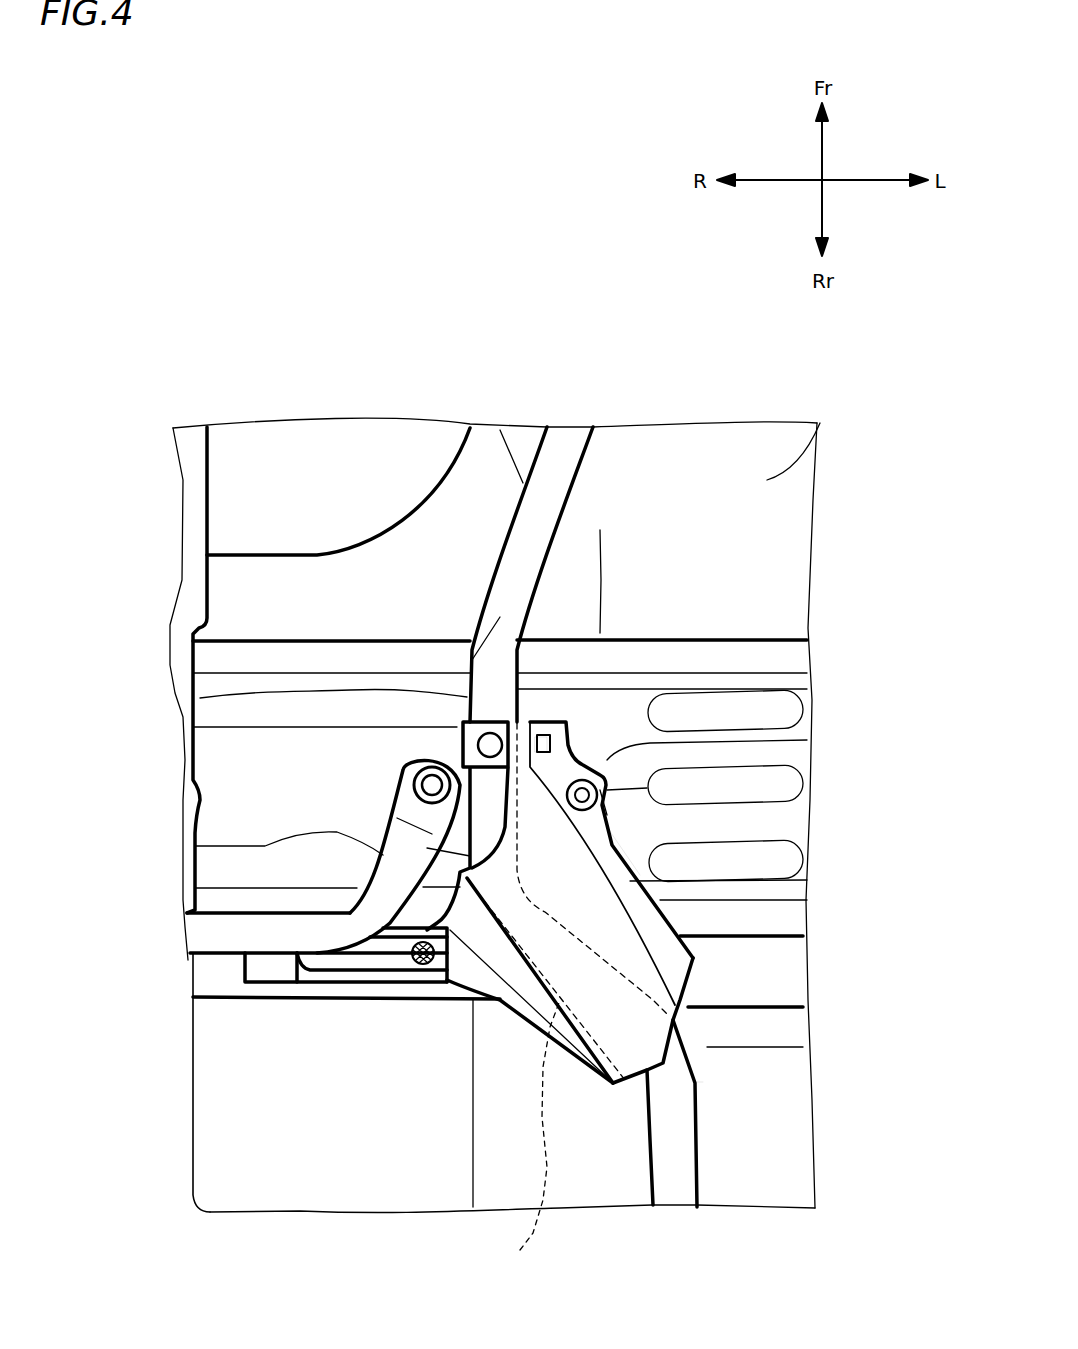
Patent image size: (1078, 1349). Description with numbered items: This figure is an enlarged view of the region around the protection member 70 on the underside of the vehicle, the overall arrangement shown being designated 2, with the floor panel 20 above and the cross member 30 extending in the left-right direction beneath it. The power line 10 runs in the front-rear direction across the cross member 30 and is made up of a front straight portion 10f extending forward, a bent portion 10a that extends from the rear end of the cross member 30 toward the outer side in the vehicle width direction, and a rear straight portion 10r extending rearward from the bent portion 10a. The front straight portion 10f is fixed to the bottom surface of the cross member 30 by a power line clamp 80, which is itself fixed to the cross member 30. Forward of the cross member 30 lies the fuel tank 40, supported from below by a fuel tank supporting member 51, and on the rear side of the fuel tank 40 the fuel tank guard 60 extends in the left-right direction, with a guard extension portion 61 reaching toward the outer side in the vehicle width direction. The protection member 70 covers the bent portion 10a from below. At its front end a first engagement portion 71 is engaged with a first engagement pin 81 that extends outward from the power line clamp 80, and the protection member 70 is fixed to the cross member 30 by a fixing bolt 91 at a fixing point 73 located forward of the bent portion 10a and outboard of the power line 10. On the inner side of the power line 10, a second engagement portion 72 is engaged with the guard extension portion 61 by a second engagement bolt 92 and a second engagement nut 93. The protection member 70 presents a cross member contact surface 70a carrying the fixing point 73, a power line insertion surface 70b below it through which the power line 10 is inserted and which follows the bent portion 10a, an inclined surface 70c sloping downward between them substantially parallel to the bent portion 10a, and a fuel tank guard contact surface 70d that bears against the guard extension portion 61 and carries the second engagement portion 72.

The vehicle body side structure 2 is at (735, 410).
The power line 10 is at (563, 463).
The bent portion 10a is at (537, 1135).
The front straight portion 10f is at (500, 617).
The rear straight portion 10r is at (690, 1163).
The floor panel 20 is at (812, 442).
The cross member 30 is at (250, 783).
The fuel tank 40 is at (350, 440).
The fuel tank supporting member 51 is at (190, 427).
The fuel tank guard 60 is at (203, 935).
The guard extension portion 61 is at (377, 962).
The protection member 70 is at (663, 972).
The cross member contact surface 70a is at (597, 826).
The power line insertion surface 70b is at (703, 1082).
The inclined surface 70c is at (672, 921).
The fuel tank guard contact surface 70d is at (485, 995).
The first engagement portion 71 is at (570, 700).
The second engagement portion 72 is at (445, 978).
The fixing point 73 is at (612, 808).
The power line clamp 80 is at (462, 723).
The first engagement pin 81 is at (550, 717).
The fixing bolt 91 is at (605, 775).
The second engagement bolt 92 is at (398, 962).
The second engagement nut 93 is at (442, 962).